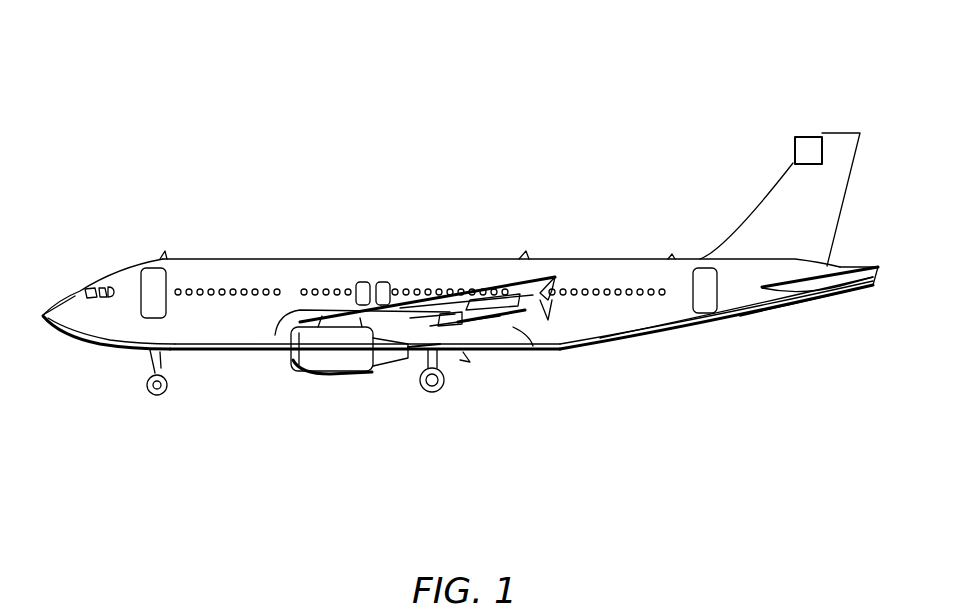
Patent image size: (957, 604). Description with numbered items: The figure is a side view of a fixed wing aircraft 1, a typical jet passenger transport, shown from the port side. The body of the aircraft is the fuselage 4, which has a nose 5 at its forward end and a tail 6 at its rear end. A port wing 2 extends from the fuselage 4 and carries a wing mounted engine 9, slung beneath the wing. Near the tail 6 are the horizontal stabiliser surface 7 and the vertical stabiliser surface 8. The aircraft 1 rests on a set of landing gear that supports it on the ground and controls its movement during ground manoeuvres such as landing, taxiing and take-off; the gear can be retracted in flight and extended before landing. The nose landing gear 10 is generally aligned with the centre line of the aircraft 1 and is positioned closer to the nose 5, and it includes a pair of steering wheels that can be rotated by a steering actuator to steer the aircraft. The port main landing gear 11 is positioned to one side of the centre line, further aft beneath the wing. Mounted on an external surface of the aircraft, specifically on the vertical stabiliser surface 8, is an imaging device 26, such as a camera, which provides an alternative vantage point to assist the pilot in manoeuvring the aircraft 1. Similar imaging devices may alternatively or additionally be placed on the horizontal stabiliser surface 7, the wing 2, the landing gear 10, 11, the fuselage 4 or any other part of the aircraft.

The aircraft 1 is at (205, 128).
The port wing 2 is at (498, 298).
The fuselage 4 is at (605, 276).
The nose 5 is at (43, 315).
The tail 6 is at (872, 292).
The horizontal stabiliser surface 7 is at (838, 277).
The vertical stabiliser surface 8 is at (840, 145).
The wing mounted engine 9 is at (330, 362).
The nose landing gear 10 is at (154, 386).
The port main landing gear 11 is at (432, 392).
The imaging device 26 is at (808, 148).